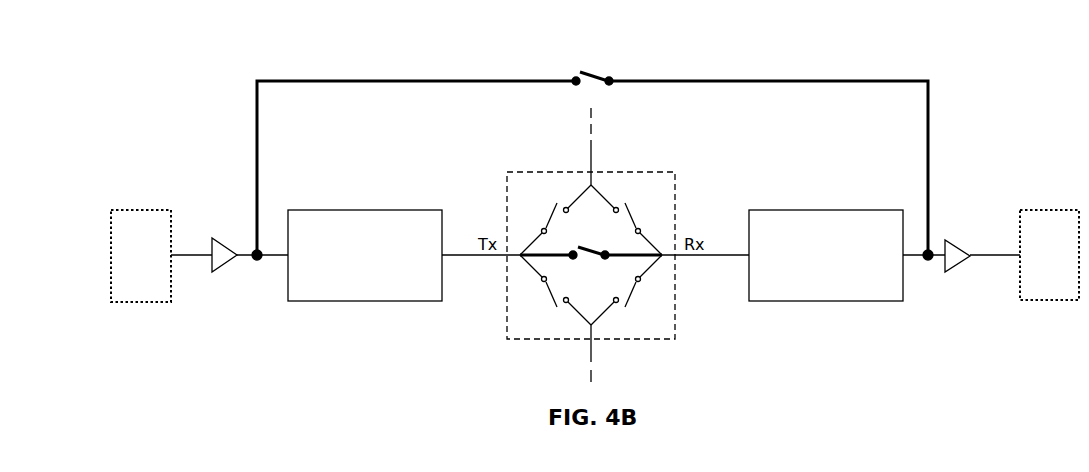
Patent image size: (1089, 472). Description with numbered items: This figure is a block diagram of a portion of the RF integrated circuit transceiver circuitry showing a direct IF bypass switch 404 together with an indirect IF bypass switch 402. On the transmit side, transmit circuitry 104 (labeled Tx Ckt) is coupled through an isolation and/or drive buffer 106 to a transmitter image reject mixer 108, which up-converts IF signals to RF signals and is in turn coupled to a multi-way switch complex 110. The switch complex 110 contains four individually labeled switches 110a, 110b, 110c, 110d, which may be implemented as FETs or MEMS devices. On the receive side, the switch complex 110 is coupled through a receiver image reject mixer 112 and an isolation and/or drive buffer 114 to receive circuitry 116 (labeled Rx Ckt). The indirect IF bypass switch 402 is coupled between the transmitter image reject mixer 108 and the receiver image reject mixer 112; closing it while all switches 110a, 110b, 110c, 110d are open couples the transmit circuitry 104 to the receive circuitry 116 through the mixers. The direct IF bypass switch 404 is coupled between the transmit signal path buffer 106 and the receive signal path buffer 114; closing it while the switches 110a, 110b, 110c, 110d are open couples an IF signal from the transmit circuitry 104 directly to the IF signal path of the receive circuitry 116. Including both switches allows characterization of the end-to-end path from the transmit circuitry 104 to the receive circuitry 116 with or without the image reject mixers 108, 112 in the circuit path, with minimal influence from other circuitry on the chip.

The transmit circuitry 104 is at (141, 210).
The isolation and/or drive buffer 106 is at (228, 238).
The image reject mixer 108 is at (364, 210).
The multi-way switch complex 110 is at (675, 172).
The switch 110a is at (645, 205).
The switch 110b is at (645, 299).
The switch 110c is at (540, 299).
The switch 110d is at (540, 205).
The image reject mixer 112 is at (851, 301).
The isolation and/or drive buffer 114 is at (960, 275).
The receive circuitry 116 is at (1048, 302).
The indirect IF bypass switch 402 is at (578, 260).
The direct IF bypass switch 404 is at (609, 68).